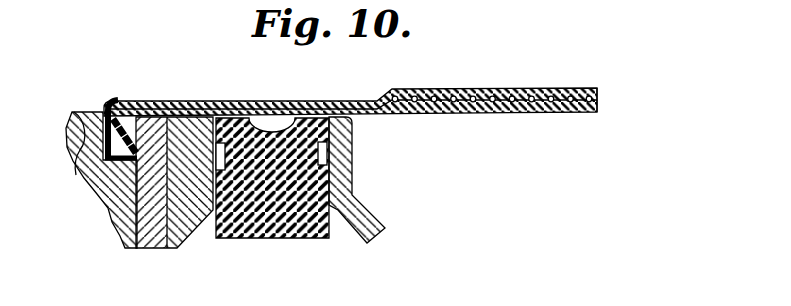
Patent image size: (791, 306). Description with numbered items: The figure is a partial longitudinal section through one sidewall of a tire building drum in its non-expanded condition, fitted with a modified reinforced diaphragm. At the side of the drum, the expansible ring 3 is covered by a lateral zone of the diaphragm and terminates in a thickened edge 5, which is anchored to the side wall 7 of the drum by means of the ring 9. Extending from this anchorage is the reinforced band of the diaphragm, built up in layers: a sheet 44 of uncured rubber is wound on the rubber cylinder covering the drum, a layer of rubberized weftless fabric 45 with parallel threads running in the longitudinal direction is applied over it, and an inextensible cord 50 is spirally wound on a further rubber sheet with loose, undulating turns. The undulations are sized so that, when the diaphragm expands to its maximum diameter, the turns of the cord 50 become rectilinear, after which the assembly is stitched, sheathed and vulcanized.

The expansible ring 3 is at (262, 238).
The thickened edge 5 is at (112, 150).
The side wall 7 is at (186, 124).
The ring 9 is at (83, 140).
The sheet of uncured rubber 44 is at (532, 113).
The layer of rubberized weftless fabric 45 is at (600, 102).
The inextensible cord 50 is at (532, 90).